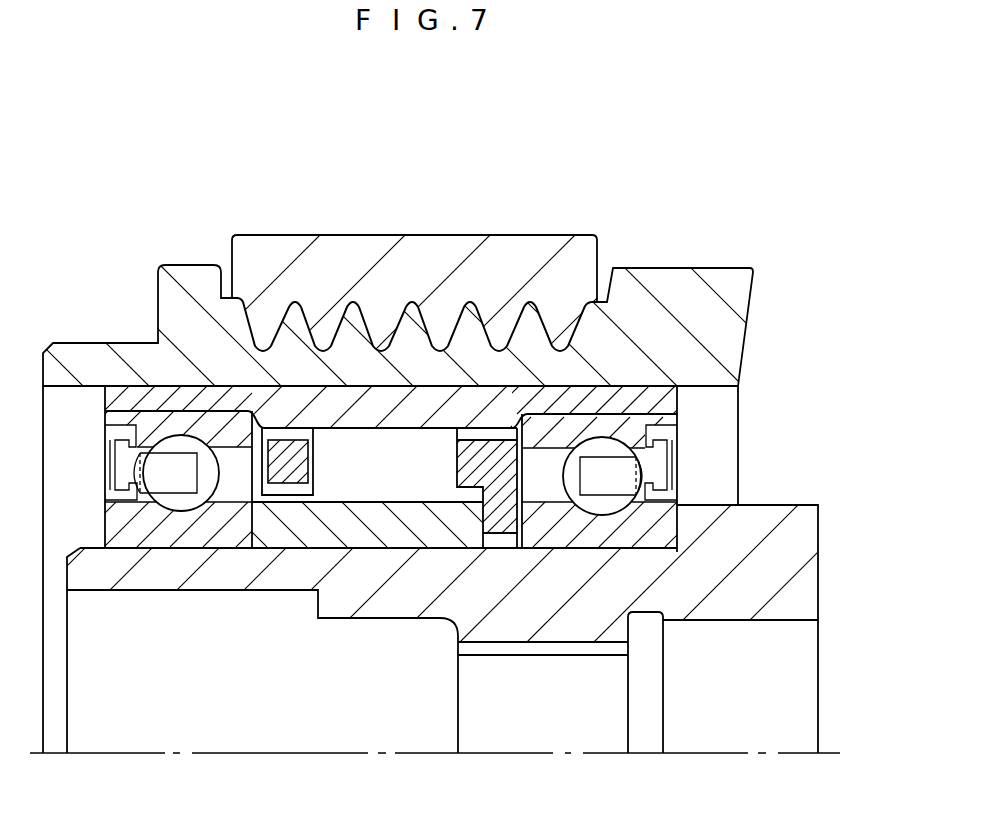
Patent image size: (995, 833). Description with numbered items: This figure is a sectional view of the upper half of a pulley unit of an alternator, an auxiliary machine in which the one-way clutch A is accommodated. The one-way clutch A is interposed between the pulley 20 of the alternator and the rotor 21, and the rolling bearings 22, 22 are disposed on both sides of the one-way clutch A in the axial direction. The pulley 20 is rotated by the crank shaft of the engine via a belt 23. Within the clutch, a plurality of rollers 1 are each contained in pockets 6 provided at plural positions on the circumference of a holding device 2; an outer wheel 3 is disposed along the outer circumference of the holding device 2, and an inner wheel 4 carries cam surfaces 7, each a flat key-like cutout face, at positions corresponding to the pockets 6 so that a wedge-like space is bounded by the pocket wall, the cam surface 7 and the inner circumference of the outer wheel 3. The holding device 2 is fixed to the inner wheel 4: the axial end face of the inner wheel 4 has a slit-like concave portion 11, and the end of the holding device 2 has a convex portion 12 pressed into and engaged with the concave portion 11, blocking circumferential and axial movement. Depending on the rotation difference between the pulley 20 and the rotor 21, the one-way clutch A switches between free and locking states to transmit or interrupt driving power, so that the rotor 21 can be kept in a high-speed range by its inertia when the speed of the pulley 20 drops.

The rollers 1 is at (402, 452).
The holding device 2 is at (323, 528).
The outer wheel 3 is at (508, 405).
The inner wheel 4 is at (293, 480).
The pockets 6 is at (347, 423).
The cam surfaces 7 is at (382, 497).
The concave portion 11 is at (497, 515).
The convex portion 12 is at (505, 520).
The pulley 20 is at (670, 278).
The rotor 21 is at (803, 588).
The rolling bearings 22 is at (176, 404).
The belt 23 is at (272, 240).
The one-way clutch A is at (262, 385).